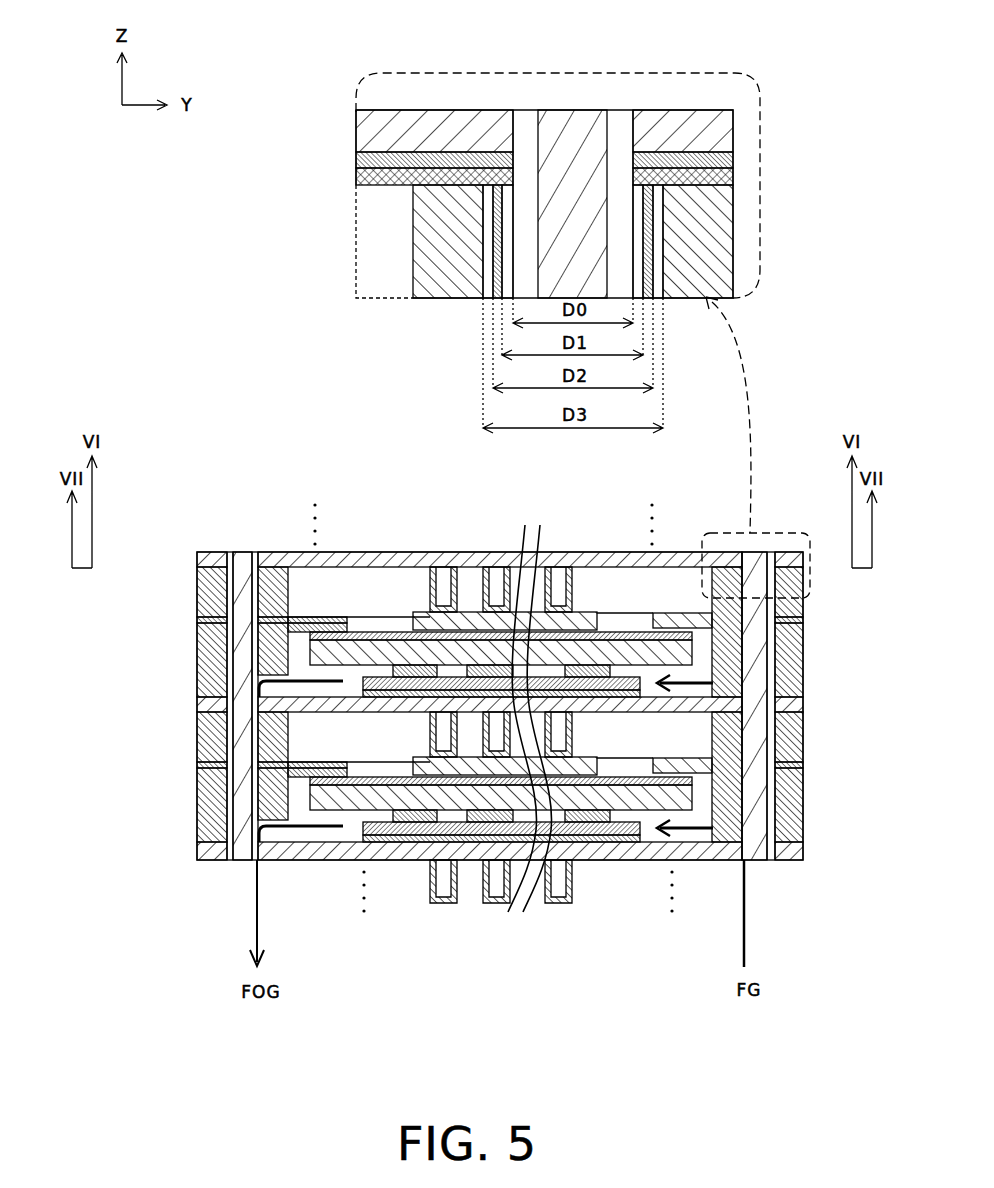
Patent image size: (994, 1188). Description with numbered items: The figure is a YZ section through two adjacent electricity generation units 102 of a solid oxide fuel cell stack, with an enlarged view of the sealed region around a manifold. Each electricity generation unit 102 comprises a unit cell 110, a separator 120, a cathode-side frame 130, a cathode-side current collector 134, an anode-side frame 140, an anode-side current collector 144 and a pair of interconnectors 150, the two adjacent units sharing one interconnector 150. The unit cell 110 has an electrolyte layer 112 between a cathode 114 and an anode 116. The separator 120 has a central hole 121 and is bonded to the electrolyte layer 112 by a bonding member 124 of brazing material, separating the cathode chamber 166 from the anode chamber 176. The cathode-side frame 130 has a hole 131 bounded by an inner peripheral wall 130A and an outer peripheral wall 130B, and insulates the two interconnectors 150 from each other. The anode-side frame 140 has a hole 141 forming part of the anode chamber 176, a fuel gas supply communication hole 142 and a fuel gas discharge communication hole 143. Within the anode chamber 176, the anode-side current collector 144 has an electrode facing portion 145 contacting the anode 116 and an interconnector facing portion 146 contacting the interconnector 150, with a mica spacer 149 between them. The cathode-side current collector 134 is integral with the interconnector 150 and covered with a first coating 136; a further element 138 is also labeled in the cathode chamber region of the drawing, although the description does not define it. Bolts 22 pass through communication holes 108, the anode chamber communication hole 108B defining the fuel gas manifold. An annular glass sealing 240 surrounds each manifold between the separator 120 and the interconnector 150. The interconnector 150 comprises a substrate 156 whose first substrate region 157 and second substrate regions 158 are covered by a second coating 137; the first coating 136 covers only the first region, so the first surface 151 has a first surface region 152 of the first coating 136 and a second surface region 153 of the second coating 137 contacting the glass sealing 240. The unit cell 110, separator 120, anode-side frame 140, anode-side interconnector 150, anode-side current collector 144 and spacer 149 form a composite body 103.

The bolt 22 is at (570, 113).
The anode chamber communication hole 108B is at (617, 115).
The first substrate region 157 is at (497, 112).
The second substrate region 158 is at (513, 112).
The substrate 156 is at (357, 130).
The second coating 137 is at (357, 161).
The first coating 136 is at (357, 178).
The interconnector 150 is at (283, 112).
The first surface 151 is at (283, 222).
The first surface region 152 is at (388, 187).
The second surface region 153 is at (392, 225).
The cathode chamber 166 is at (366, 262).
The cathode-side frame 130 is at (388, 297).
The inner peripheral wall 130A is at (388, 288).
The outer peripheral wall 130B is at (715, 300).
The glass sealing 240 is at (455, 298).
The unit cell 110 is at (313, 458).
The anode 116 is at (362, 620).
The electrolyte layer 112 is at (378, 628).
The cathode 114 is at (415, 612).
The cathode-side current collector 134 is at (550, 560).
The electricity generation unit 102 is at (120, 553).
The composite body 103 is at (812, 617).
The separator 120 is at (197, 620).
The anode-side frame 140 is at (197, 665).
The bonding member 124 is at (353, 622).
The plate 138 is at (577, 610).
The hole 131 is at (290, 738).
The hole 121 is at (347, 776).
The communication hole 108 is at (230, 862).
The fuel gas discharge communication hole 143 is at (280, 862).
The hole 141 is at (315, 862).
The spacer 149 is at (400, 862).
The electrode facing portion 145 is at (446, 903).
The interconnector facing portion 146 is at (490, 903).
The anode-side current collector 144 is at (403, 963).
The anode chamber 176 is at (650, 862).
The fuel gas supply communication hole 142 is at (727, 862).